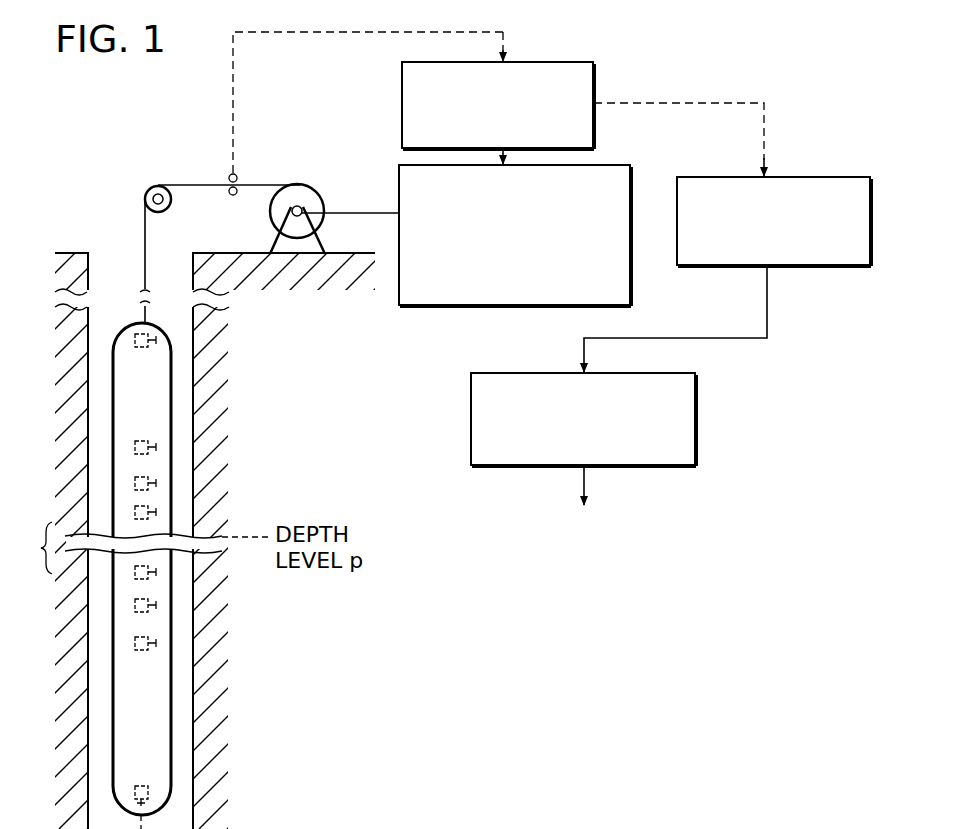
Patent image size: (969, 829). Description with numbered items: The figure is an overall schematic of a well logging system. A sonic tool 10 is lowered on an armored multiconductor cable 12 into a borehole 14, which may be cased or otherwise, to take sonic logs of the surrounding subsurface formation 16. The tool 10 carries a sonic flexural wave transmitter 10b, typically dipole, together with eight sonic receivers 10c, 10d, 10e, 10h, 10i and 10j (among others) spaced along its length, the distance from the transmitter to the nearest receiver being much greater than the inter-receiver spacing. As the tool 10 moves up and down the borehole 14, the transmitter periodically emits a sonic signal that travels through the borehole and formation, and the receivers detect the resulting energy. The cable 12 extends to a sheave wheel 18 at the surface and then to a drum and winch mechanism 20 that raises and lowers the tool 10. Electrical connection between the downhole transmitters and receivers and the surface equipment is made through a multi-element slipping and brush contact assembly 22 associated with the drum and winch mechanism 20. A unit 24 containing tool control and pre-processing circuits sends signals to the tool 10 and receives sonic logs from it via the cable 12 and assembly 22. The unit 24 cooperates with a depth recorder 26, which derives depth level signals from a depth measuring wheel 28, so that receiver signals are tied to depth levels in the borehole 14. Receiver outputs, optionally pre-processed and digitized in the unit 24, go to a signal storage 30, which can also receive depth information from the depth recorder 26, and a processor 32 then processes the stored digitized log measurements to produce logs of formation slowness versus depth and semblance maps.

The sonic tool 10 is at (157, 398).
The transmitter 10b is at (156, 340).
The sonic receiver 10c is at (156, 447).
The sonic receiver 10d is at (156, 483).
The sonic receiver 10e is at (156, 512).
The sonic receiver 10h is at (156, 572).
The sonic receiver 10i is at (156, 605).
The sonic receiver 10j is at (156, 643).
The armored multiconductor cable 12 is at (146, 248).
The borehole 14 is at (200, 418).
The subsurface formation 16 is at (360, 432).
The sheave wheel 18 is at (152, 186).
The drum and winch mechanism 20 is at (316, 190).
The multi-element slipping and brush contact assembly 22 is at (314, 245).
The unit containing tool control and pre-processing circuits 24 is at (612, 164).
The depth recorder 26 is at (595, 72).
The depth measuring wheel 28 is at (237, 176).
The signal storage 30 is at (848, 176).
The processor 32 is at (697, 388).